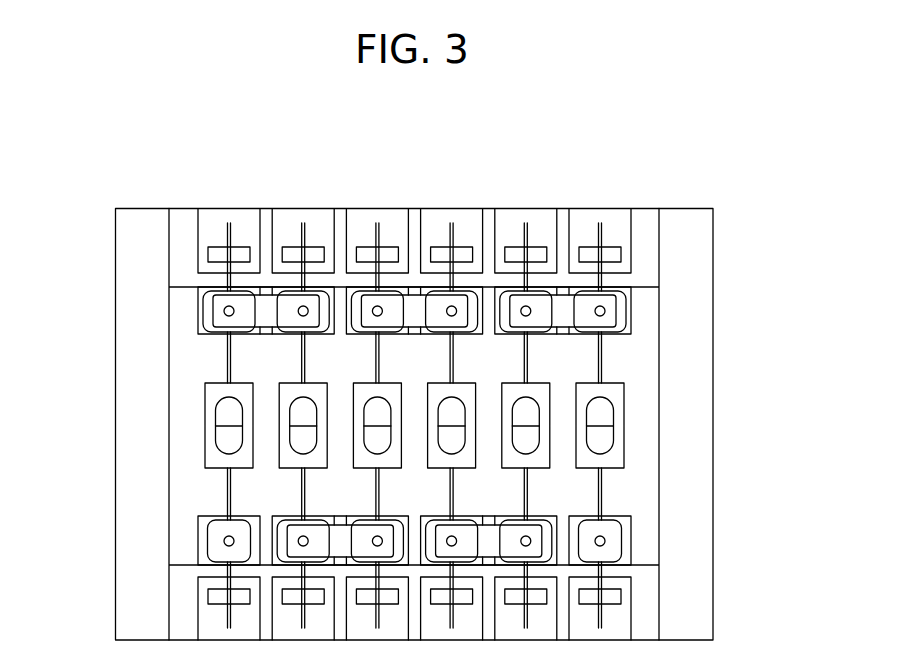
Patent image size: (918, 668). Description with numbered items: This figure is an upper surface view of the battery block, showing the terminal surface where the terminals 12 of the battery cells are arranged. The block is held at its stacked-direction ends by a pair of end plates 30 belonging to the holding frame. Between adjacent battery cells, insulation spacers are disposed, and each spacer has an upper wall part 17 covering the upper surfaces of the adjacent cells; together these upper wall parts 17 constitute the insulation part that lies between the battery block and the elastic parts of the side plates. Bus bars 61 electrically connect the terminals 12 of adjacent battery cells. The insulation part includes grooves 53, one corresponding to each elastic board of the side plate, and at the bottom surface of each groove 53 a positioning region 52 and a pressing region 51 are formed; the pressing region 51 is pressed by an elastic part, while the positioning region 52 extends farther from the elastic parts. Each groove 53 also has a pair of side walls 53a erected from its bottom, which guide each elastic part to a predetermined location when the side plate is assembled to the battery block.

The terminal 12 is at (213, 532).
The upper wall part 17 is at (414, 379).
The end plate 30 is at (692, 428).
The pressing region 51 is at (460, 250).
The positioning region 52 is at (430, 212).
The groove 53 is at (304, 202).
The side wall 53a is at (276, 213).
The bus bar 61 is at (578, 305).